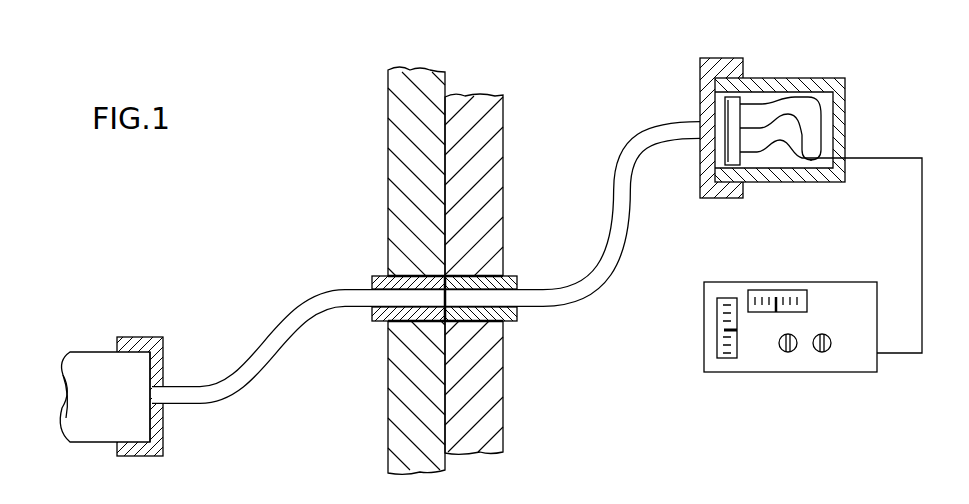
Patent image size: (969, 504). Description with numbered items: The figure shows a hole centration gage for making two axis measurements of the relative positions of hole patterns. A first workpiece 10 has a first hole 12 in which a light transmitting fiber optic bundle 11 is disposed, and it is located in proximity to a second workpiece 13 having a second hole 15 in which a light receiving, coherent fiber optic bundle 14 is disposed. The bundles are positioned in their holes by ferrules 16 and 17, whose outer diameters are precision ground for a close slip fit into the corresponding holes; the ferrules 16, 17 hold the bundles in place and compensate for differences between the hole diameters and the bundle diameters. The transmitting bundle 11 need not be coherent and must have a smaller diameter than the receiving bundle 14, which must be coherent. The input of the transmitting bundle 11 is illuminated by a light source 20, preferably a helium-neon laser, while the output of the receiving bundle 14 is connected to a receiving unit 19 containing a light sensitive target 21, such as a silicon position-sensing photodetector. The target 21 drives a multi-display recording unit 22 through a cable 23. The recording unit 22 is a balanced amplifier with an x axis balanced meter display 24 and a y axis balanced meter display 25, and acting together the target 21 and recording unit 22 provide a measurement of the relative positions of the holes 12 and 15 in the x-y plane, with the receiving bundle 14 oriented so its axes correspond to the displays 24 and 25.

The first workpiece 10 is at (388, 143).
The light transmitting fiber optic bundle 11 is at (245, 358).
The first hole 12 is at (378, 322).
The second workpiece 13 is at (505, 135).
The light receiving coherent fiber optic bundle 14 is at (622, 236).
The second hole 15 is at (517, 322).
The ferrule 16 is at (377, 275).
The ferrule 17 is at (518, 275).
The receiving unit 19 is at (698, 93).
The light source 20 is at (113, 443).
The light sensitive target 21 is at (740, 104).
The multi-display recording unit 22 is at (790, 346).
The cable 23 is at (922, 240).
The x axis balanced meter display 24 is at (808, 303).
The y axis balanced meter display 25 is at (737, 330).